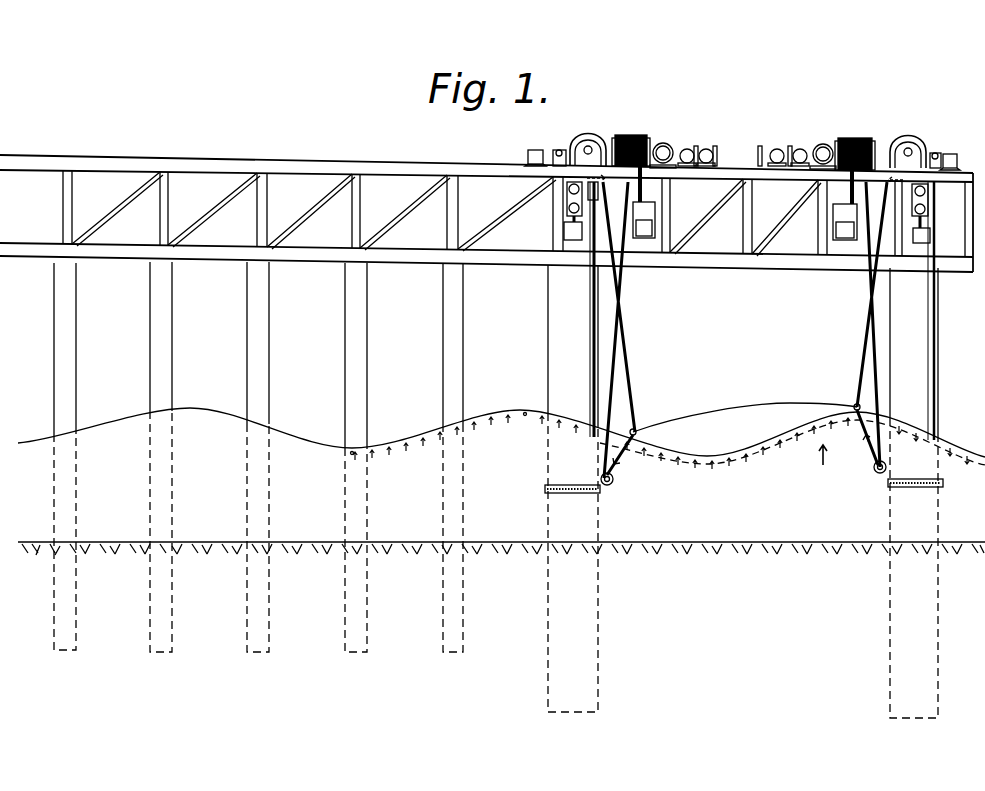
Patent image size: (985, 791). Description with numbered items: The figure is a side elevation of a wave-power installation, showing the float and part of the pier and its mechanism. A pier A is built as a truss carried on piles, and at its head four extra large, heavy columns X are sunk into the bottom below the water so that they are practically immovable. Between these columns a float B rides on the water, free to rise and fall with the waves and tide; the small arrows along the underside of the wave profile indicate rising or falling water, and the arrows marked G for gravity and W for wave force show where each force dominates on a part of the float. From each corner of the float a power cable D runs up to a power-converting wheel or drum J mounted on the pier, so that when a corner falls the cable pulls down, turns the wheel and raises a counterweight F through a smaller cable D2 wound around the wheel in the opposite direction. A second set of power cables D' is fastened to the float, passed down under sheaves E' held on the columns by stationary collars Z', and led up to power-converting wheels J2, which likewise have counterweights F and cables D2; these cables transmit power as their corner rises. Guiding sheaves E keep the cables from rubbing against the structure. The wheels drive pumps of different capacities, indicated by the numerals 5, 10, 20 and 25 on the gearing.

The pier A is at (363, 170).
The columns X is at (743, 450).
The float B is at (792, 434).
The wave force arrow W is at (828, 463).
The power cables D is at (745, 330).
The gravity arrow G is at (671, 417).
The power cables D' is at (742, 448).
The sheaves or pulleys E' is at (743, 482).
The stationary collars Z' is at (745, 485).
The guiding sheaves or rollers E is at (745, 179).
The power-converting wheel or drum J is at (880, 134).
The power-converting wheels J2 is at (850, 130).
The gear wheel 20 is at (663, 155).
The gear wheel 25 is at (823, 156).
The shaft bearing 5 is at (687, 148).
The shaft bearing wheels 10 is at (706, 148).
The counterweight F is at (747, 223).
The cable D2 is at (660, 205).